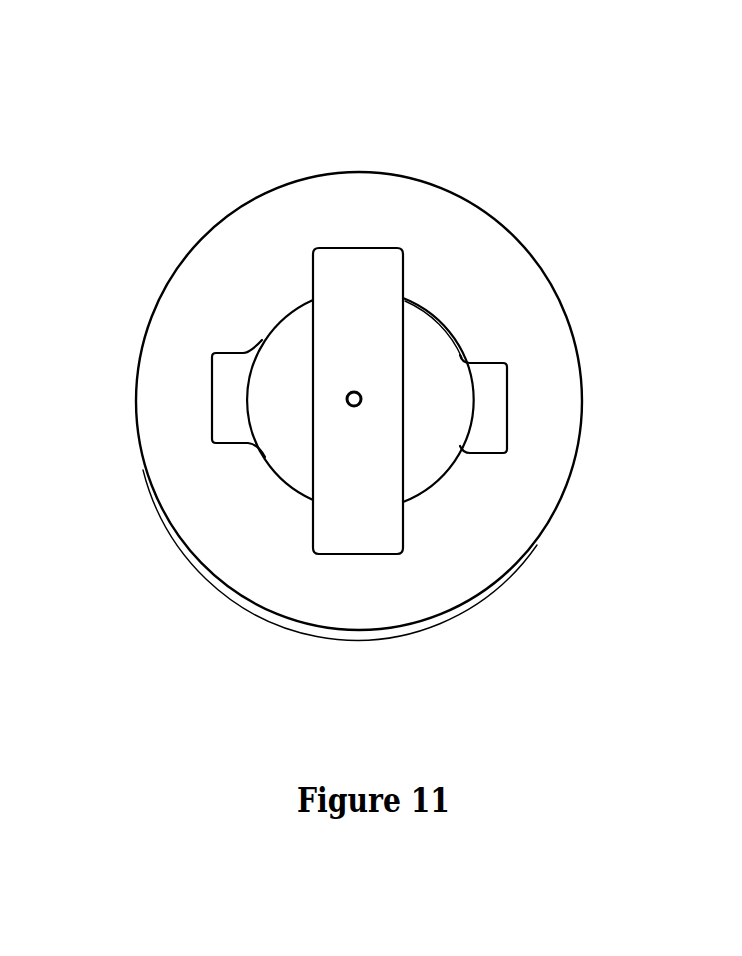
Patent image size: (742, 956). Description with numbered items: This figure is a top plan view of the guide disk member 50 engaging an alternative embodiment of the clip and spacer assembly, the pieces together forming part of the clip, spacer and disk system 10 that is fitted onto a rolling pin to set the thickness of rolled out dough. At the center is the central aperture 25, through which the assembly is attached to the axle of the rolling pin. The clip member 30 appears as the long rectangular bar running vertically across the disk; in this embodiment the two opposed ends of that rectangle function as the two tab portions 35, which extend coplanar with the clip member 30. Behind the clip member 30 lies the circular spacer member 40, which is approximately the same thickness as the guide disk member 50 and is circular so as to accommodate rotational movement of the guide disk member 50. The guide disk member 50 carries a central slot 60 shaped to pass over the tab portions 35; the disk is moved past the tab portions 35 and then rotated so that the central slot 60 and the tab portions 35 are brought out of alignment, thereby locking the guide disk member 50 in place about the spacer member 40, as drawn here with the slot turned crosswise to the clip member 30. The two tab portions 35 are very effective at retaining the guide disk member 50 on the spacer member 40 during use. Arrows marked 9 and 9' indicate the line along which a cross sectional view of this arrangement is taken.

The clip, spacer and disk system 10 is at (592, 151).
The central aperture 25 is at (342, 392).
The clip member 30 is at (370, 463).
The tab portions 35 is at (365, 267).
The spacer member 40 is at (282, 380).
The guide disk member 50 is at (512, 292).
The central slot 60 is at (225, 413).
The section line 9-9' 9 is at (395, 133).
The section line 9- 9' is at (384, 660).